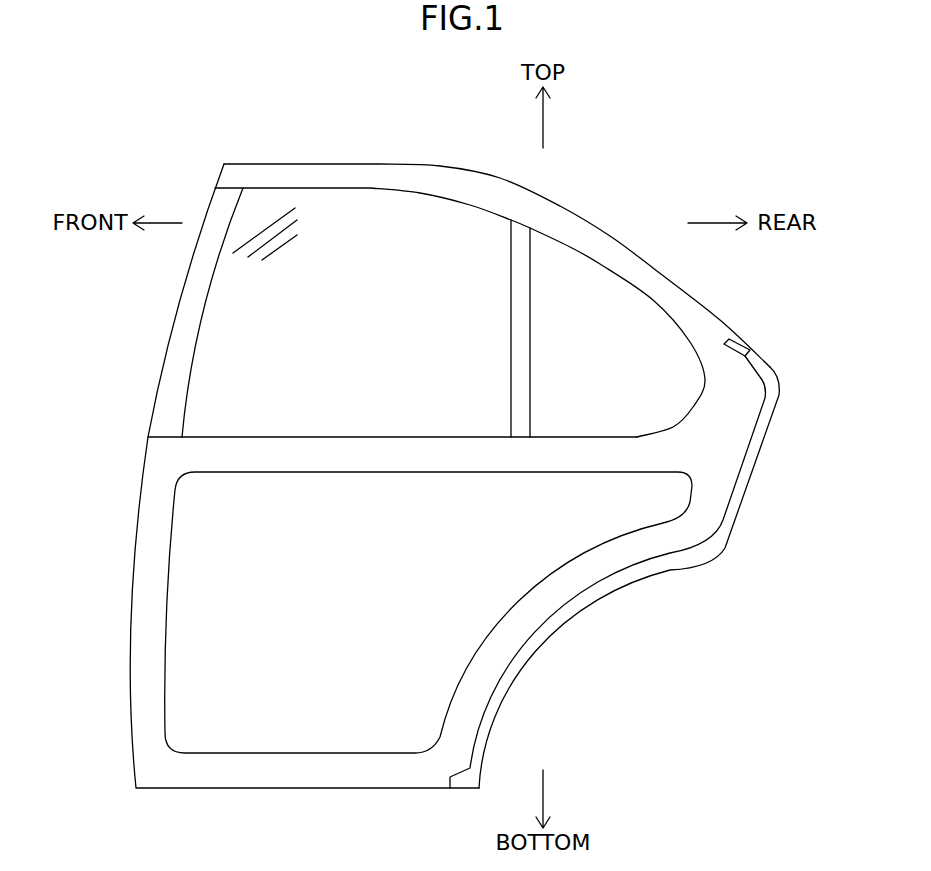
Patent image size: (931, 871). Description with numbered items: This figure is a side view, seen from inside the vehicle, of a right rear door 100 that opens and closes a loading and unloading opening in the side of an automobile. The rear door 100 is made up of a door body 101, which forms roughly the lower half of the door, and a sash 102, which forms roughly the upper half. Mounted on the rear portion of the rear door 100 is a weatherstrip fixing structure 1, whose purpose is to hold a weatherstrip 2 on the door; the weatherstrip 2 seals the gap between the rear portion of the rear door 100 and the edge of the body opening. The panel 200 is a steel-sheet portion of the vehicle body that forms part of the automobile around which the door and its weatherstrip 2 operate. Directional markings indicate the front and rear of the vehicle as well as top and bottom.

The weatherstrip fixing structure 1 is at (773, 341).
The weatherstrip 2 is at (748, 485).
The rear door 100 is at (132, 491).
The door body 101 is at (150, 587).
The sash 102 is at (333, 163).
The panel 200 is at (165, 683).